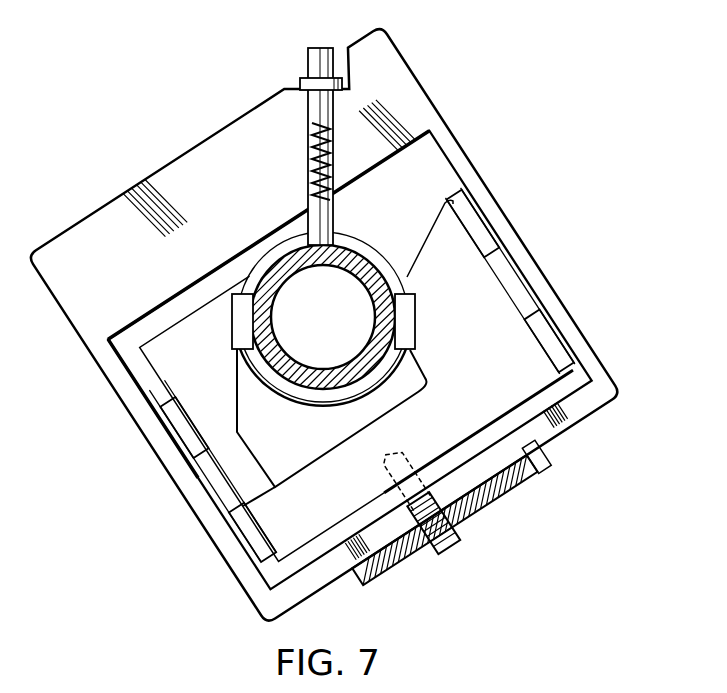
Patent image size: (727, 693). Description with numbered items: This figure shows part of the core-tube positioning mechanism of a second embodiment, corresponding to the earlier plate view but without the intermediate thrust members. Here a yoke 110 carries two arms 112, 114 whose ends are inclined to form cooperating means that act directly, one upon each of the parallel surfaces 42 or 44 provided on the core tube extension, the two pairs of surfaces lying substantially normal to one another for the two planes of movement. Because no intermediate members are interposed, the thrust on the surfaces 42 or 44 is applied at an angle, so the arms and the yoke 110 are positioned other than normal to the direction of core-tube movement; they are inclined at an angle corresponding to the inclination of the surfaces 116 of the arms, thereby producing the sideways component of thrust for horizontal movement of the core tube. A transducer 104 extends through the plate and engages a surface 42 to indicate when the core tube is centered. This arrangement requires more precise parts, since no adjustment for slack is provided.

The transducer 104 is at (308, 57).
The yoke 110 is at (506, 420).
The arm 112 is at (480, 306).
The arm 114 is at (198, 390).
The inclined surfaces of the arms 116 is at (407, 277).
The pair of parallel surfaces 42 is at (346, 246).
The pair of parallel surfaces 44 is at (273, 315).